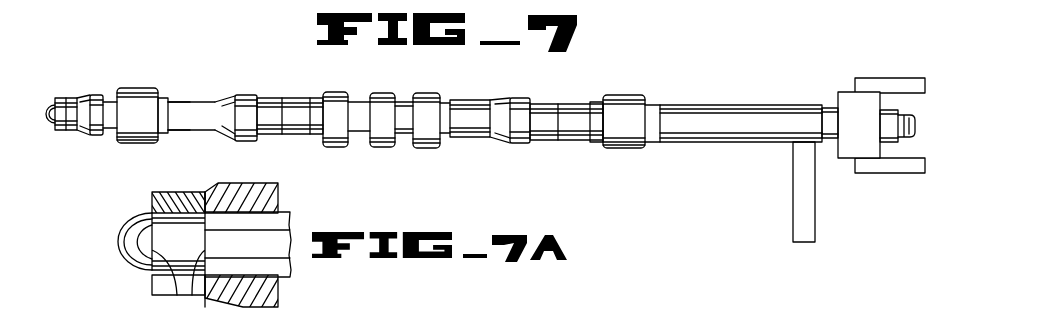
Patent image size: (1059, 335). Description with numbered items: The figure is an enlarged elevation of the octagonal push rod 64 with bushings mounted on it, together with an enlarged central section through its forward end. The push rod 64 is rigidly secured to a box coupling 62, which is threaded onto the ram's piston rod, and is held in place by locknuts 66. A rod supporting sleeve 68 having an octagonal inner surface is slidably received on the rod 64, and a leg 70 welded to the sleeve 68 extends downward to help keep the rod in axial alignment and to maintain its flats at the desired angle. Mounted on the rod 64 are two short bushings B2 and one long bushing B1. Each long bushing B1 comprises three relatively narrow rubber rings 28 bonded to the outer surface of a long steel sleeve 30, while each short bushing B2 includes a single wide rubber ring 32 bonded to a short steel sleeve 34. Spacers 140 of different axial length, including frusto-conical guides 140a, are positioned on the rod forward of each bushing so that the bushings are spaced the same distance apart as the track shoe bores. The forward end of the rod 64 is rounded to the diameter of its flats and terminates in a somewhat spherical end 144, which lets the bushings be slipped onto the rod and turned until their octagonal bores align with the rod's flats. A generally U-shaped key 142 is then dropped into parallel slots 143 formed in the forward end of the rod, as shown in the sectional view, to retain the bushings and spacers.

In FIG. 7, the spherical end 144 is at (50, 108).
In FIG. 7A, the spherical end 144 is at (127, 248).
In FIG. 7, the key 142 is at (73, 134).
In FIG. 7A, the key 142 is at (152, 201).
In FIG. 7, the frusto-conical guide 140a is at (88, 95).
In FIG. 7A, the frusto-conical guide 140a is at (277, 293).
In FIG. 7, the wide rubber ring 32 is at (140, 89).
In FIG. 7, the short steel sleeve 34 is at (167, 134).
In FIG. 7, the short bushing B2 is at (168, 92).
In FIG. 7, the spacer 140 is at (292, 135).
In FIG. 7, the narrow rubber ring 28 is at (420, 93).
In FIG. 7, the long steel sleeve 30 is at (401, 138).
In FIG. 7, the long bushing B1 is at (450, 94).
In FIG. 7, the rod supporting sleeve 68 is at (733, 107).
In FIG. 7, the leg 70 is at (793, 201).
In FIG. 7, the box coupling 62 is at (887, 79).
In FIG. 7, the locknuts 66 is at (832, 143).
In FIG. 7, the octagonal push rod 64 is at (913, 140).
In FIG. 7A, the octagonal push rod 64 is at (287, 225).
In FIG. 7A, the slot 143 is at (192, 292).